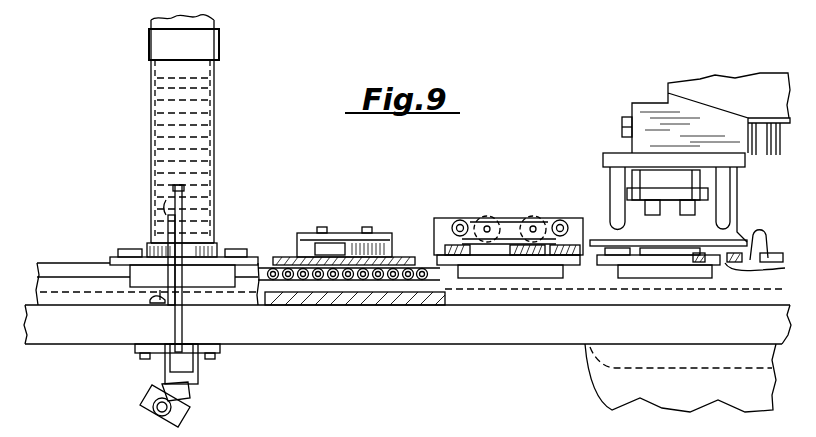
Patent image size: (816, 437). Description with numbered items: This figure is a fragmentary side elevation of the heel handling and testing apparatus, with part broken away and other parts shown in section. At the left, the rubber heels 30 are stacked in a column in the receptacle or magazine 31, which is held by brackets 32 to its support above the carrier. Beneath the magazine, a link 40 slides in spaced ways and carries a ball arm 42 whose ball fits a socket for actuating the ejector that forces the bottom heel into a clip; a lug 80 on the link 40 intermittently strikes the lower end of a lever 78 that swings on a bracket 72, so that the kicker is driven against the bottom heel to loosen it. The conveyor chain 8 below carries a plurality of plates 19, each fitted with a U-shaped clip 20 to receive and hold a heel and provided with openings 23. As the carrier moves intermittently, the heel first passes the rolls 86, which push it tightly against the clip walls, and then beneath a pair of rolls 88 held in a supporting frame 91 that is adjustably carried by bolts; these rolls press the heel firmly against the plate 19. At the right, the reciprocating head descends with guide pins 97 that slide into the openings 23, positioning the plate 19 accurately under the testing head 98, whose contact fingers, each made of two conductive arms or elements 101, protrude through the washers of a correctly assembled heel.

The conveyor chain 8 is at (413, 282).
The plate 19 is at (628, 273).
The U-shaped clip 20 is at (660, 252).
The openings 23 is at (783, 262).
The rubber heel 30 is at (205, 83).
The receptacle or magazine 31 is at (215, 101).
The brackets 32 is at (215, 175).
The link 40 is at (192, 373).
The ball arm 42 is at (192, 391).
The bracket 72 is at (163, 284).
The lever 78 is at (183, 321).
The lug 80 is at (534, 216).
The rolls 86 is at (305, 243).
The rolls 88 is at (487, 216).
The supporting frame 91 is at (511, 222).
The guide pins 97 is at (612, 183).
The testing head 98 is at (706, 181).
The arms or elements 101 is at (688, 210).